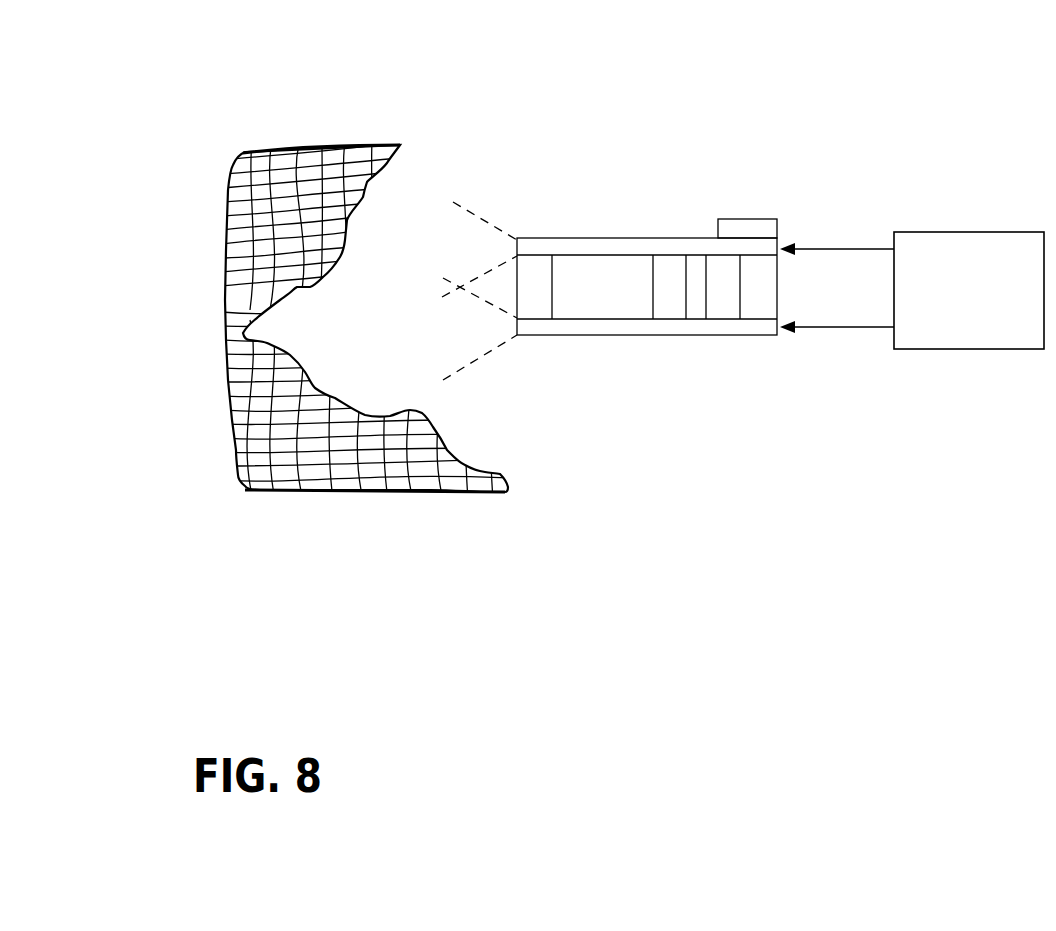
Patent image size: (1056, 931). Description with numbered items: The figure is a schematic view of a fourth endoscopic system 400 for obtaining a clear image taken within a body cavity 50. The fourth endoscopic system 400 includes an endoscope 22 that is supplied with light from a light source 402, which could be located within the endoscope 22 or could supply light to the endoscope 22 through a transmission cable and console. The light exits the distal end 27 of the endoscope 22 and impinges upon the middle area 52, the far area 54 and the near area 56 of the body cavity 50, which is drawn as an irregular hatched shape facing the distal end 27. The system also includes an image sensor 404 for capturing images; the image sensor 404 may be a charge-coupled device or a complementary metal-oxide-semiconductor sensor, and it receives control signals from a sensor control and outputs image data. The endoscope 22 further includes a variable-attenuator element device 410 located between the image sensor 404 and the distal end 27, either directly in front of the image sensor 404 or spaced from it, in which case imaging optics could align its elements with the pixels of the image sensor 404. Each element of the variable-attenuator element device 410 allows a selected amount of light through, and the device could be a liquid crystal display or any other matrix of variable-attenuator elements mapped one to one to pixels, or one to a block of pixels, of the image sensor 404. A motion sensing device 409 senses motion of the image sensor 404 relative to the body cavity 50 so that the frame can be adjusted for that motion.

The body cavity 50 is at (298, 152).
The middle area 52 is at (300, 290).
The far area 54 is at (331, 400).
The near area 56 is at (422, 420).
The fourth endoscopic system 400 is at (699, 172).
The endoscope 22 is at (660, 234).
The distal end 27 is at (528, 234).
The variable-attenuator element device 410 is at (672, 305).
The image sensor 404 is at (727, 305).
The motion sensing device 409 is at (753, 232).
The light source 402 is at (938, 232).